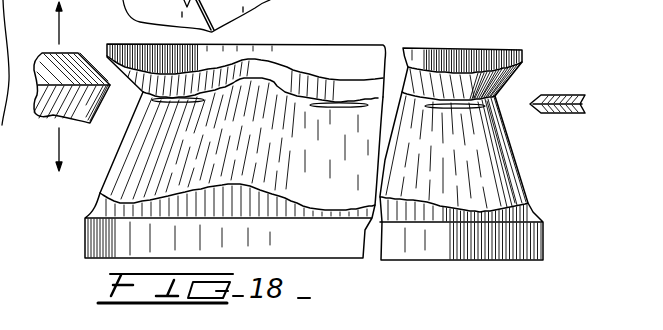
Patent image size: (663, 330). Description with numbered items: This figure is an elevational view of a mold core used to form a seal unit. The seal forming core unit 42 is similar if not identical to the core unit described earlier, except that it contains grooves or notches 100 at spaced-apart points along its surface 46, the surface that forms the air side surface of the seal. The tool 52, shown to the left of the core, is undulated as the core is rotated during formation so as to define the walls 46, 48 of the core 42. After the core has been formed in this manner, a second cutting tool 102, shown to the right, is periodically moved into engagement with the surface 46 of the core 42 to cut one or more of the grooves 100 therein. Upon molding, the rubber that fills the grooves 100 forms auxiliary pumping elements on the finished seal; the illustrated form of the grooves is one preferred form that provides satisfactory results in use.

The seal forming core unit 42 is at (493, 5).
The surface of the core 46 is at (361, 168).
The wall of the core 48 is at (343, 16).
The tool 52 is at (55, 113).
The grooves or notches 100 is at (175, 102).
The second cutting tool 102 is at (564, 95).